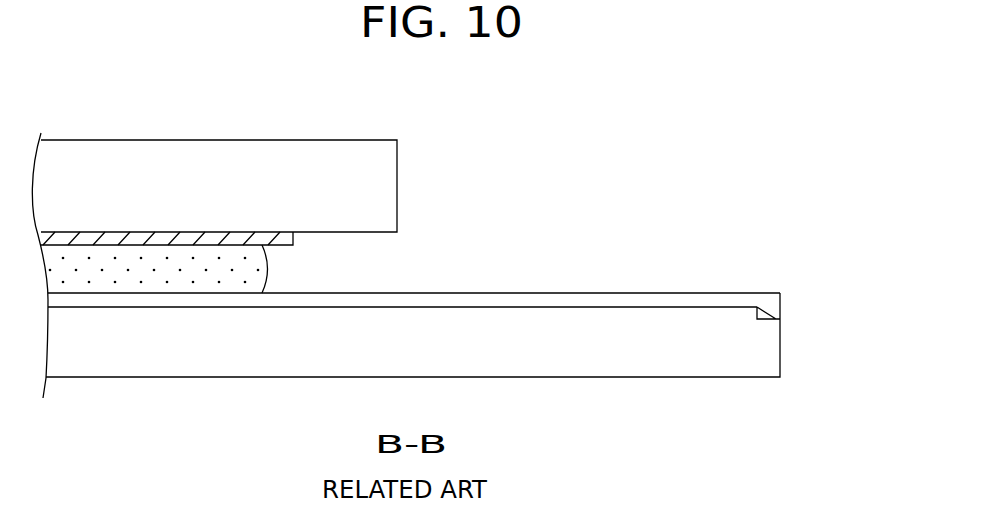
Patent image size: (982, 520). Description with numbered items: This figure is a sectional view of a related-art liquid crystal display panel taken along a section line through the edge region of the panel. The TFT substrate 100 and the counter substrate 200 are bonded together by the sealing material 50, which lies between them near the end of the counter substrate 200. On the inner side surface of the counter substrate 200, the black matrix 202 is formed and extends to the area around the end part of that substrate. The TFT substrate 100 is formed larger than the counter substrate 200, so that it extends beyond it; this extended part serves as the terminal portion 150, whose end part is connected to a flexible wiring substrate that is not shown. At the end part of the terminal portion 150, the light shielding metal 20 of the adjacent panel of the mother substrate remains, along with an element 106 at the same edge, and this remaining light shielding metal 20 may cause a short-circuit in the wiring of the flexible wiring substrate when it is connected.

The counter substrate 200 is at (338, 140).
The black matrix 202 is at (182, 240).
The sealing material 50 is at (232, 262).
The terminal portion 150 is at (538, 290).
The terminal portion 106 is at (772, 297).
The light shielding metal 20 is at (779, 318).
The TFT substrate 100 is at (690, 370).